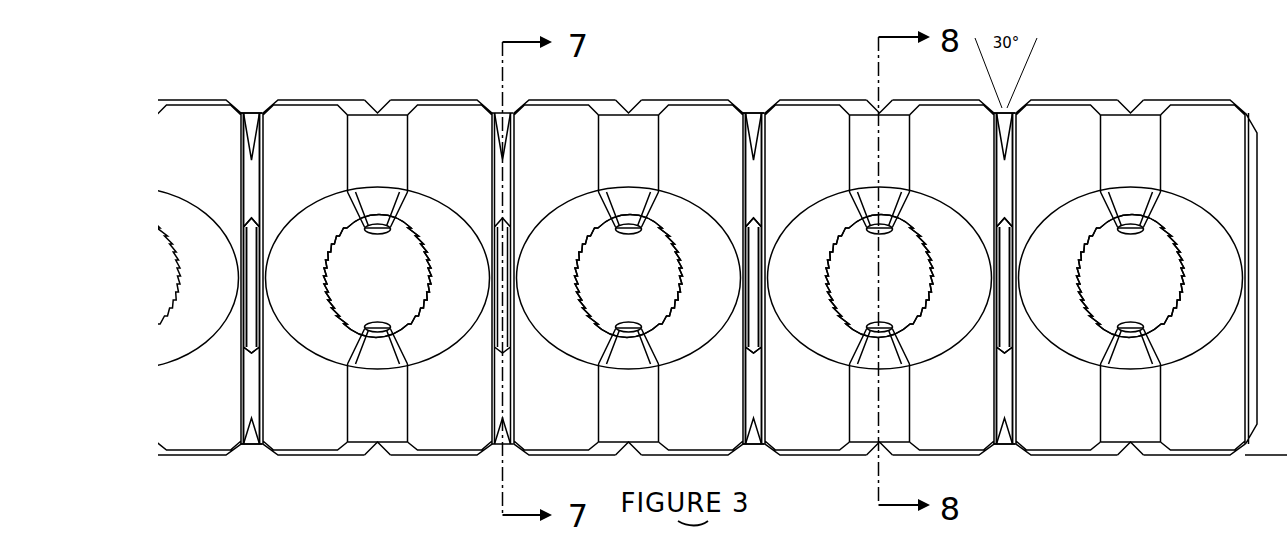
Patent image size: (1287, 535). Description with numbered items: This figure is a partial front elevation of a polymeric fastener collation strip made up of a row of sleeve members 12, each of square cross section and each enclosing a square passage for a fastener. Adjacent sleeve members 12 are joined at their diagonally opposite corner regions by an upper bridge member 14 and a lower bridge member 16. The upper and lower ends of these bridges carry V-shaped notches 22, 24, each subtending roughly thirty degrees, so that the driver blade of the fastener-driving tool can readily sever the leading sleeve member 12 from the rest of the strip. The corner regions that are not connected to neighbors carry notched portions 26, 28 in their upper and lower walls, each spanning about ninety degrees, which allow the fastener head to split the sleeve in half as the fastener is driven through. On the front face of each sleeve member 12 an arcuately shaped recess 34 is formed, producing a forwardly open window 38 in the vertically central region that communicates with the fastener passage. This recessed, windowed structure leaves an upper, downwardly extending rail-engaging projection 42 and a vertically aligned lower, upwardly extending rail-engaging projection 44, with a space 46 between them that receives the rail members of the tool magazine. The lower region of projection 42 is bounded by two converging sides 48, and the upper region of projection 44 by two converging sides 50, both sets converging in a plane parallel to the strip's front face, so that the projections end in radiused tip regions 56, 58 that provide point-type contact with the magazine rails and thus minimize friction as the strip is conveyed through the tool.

The sleeve member 12 is at (303, 133).
The upper bridge member 14 is at (253, 181).
The lower bridge member 16 is at (248, 395).
The V-shaped notch 22 is at (250, 140).
The V-shaped notch 24 is at (250, 442).
The notched portion 26 is at (378, 100).
The notched portion 28 is at (378, 452).
The arcuately shaped recess 34 is at (693, 320).
The forwardly open window 38 is at (588, 305).
The upper rail-engaging projection 42 is at (385, 162).
The lower rail-engaging projection 44 is at (390, 405).
The space 46 is at (372, 270).
The converging sides 48 is at (393, 209).
The converging sides 50 is at (355, 353).
The tip region 56 is at (378, 237).
The tip region 58 is at (378, 318).